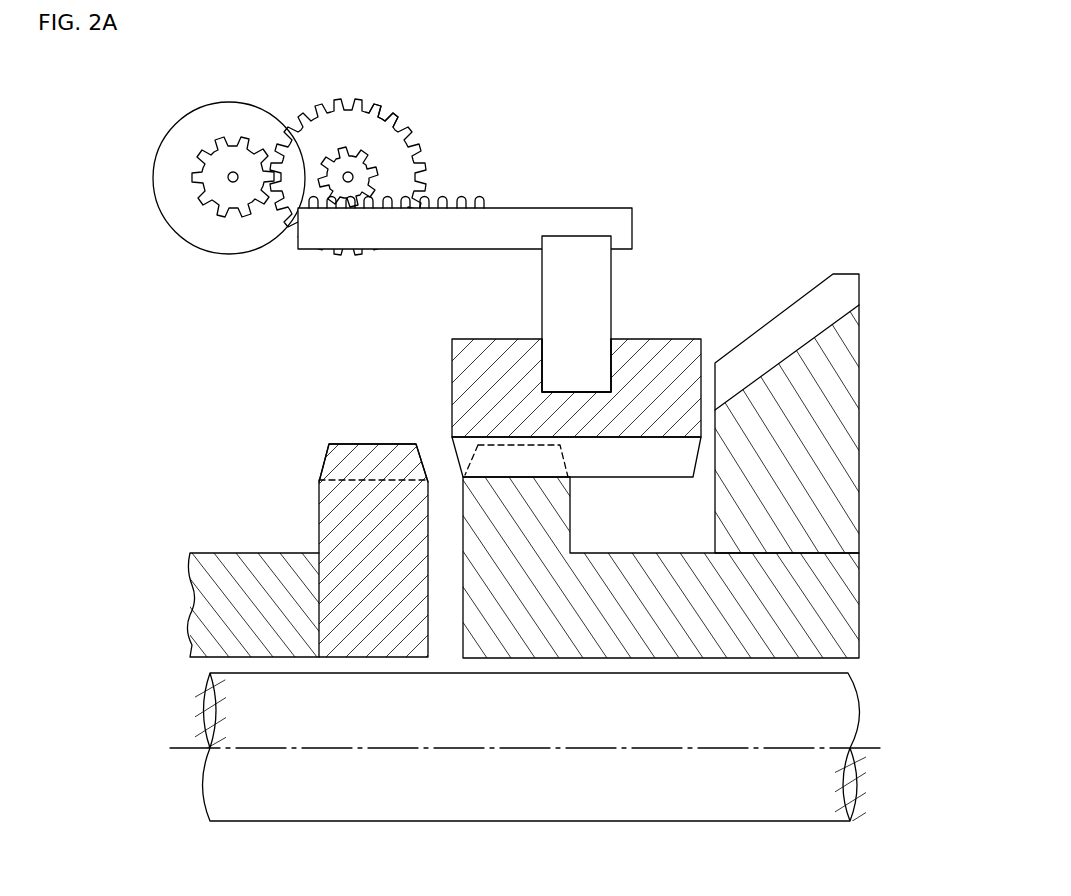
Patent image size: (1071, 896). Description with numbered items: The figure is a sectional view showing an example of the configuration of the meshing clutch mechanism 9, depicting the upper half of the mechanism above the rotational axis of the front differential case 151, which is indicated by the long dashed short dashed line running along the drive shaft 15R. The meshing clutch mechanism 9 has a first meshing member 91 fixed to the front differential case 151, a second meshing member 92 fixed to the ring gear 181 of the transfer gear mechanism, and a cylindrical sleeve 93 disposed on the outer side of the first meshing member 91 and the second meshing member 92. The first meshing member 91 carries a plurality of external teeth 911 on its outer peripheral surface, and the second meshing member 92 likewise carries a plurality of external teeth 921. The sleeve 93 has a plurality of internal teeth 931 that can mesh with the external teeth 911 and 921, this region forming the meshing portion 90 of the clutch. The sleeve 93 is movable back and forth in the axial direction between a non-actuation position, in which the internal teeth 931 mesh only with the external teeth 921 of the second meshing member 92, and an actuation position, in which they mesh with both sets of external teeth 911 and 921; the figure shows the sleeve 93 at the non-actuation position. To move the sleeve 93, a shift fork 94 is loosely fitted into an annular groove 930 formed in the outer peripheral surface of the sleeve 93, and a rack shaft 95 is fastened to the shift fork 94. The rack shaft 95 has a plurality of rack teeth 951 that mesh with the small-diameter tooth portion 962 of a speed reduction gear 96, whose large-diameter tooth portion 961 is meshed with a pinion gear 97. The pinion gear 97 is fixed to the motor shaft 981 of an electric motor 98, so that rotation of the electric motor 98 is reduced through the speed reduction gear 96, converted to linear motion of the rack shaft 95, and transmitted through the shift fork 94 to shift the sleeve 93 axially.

The meshing clutch mechanism 9 is at (783, 130).
The electric motor 98 is at (192, 110).
The pinion gear 97 is at (197, 173).
The motor shaft 981 is at (231, 182).
The speed reduction gear 96 is at (333, 102).
The large-diameter tooth portion 961 is at (380, 106).
The small-diameter tooth portion 962 is at (367, 157).
The rack shaft 95 is at (578, 207).
The rack teeth 951 is at (458, 197).
The shift fork 94 is at (612, 302).
The sleeve 93 is at (650, 338).
The annular groove 930 is at (583, 390).
The internal teeth 931 is at (620, 475).
The external teeth 921 is at (489, 445).
The meshing portion 90 is at (373, 402).
The first meshing member 91 is at (325, 517).
The external teeth 911 is at (372, 458).
The front differential case 151 is at (240, 560).
The second meshing member 92 is at (647, 610).
The ring gear 181 is at (847, 428).
The drive shaft 15R is at (740, 813).